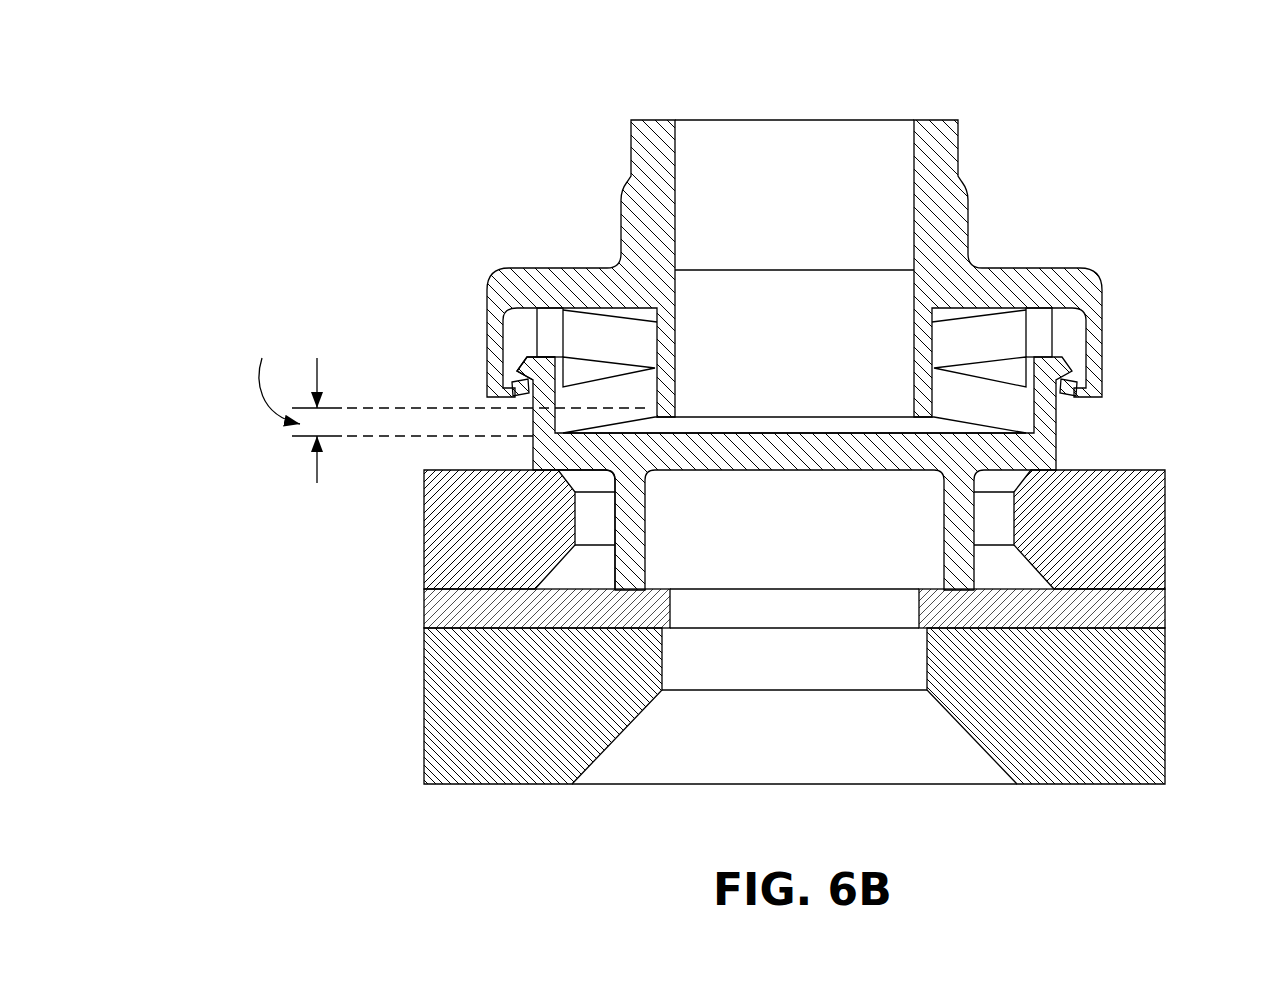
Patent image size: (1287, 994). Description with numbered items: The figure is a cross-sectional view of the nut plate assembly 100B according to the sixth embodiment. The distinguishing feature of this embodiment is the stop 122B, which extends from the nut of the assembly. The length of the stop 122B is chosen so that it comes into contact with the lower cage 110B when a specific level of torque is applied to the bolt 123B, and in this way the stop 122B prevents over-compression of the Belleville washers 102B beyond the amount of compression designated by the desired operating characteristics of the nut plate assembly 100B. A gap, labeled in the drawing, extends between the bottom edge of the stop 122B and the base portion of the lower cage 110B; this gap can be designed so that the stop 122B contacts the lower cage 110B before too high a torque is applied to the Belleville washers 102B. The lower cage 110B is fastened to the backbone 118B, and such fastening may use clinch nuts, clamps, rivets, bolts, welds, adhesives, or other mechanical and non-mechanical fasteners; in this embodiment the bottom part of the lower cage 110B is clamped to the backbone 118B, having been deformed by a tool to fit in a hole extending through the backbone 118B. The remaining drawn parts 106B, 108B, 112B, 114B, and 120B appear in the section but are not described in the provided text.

The nut plate assembly 100B is at (741, 453).
The Belleville washers 102B is at (1033, 333).
The housing flange 106B is at (510, 268).
The retaining clip 108B is at (1073, 400).
The lower cage 110B is at (592, 473).
The seal carrier 112B is at (532, 421).
The carrier lip 114B is at (523, 355).
The backbone 118B is at (1167, 557).
The lower block 120B is at (422, 694).
The stop 122B is at (933, 400).
The bolt 123B is at (878, 785).